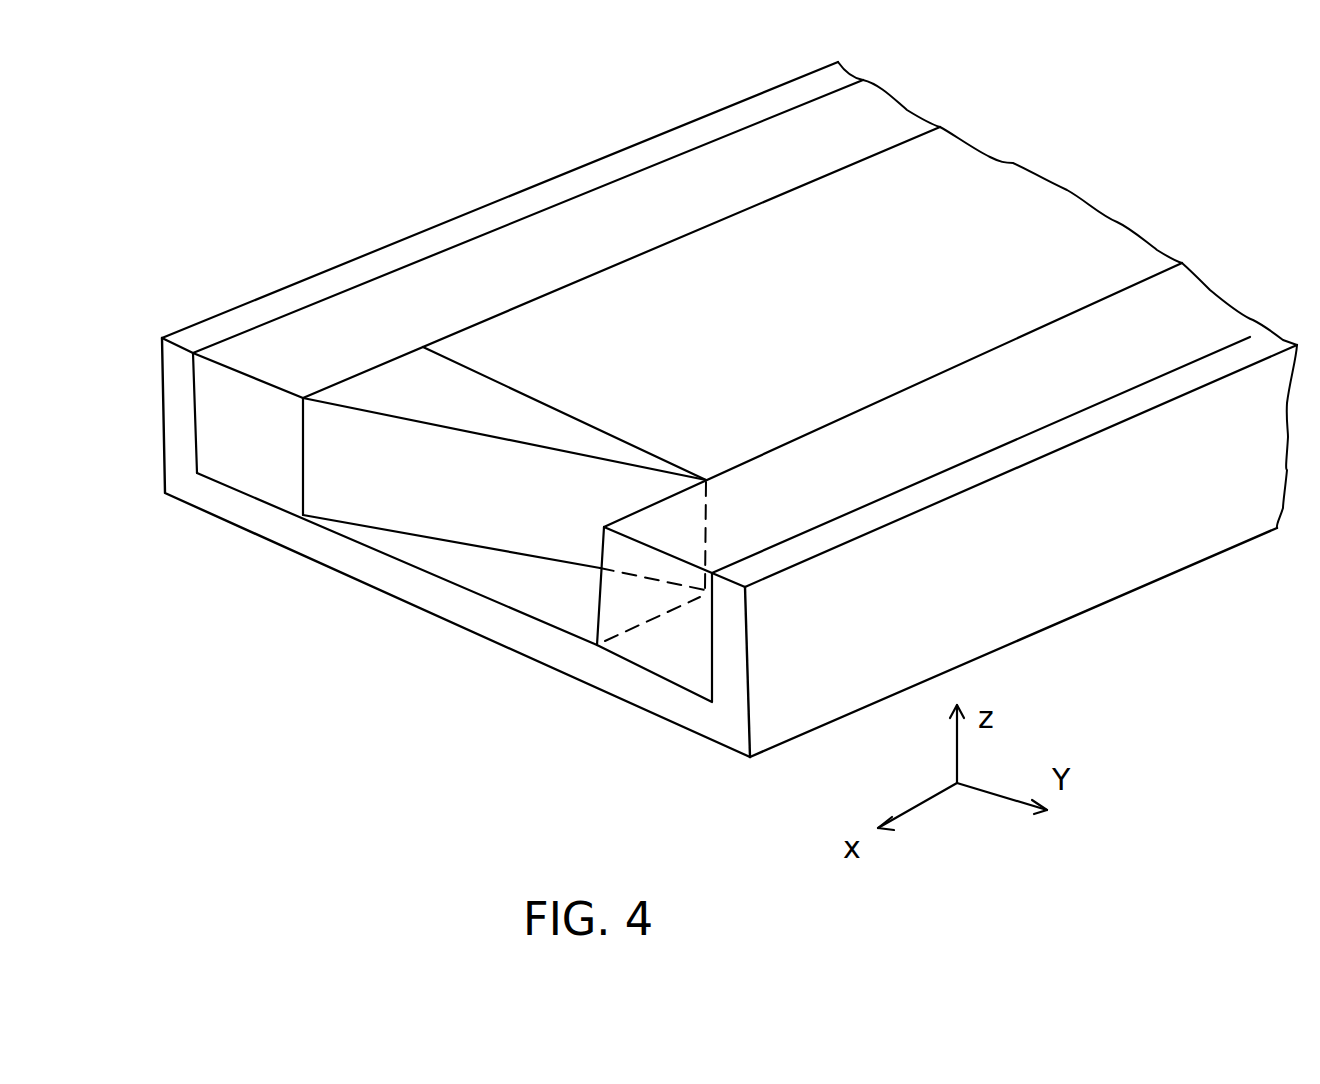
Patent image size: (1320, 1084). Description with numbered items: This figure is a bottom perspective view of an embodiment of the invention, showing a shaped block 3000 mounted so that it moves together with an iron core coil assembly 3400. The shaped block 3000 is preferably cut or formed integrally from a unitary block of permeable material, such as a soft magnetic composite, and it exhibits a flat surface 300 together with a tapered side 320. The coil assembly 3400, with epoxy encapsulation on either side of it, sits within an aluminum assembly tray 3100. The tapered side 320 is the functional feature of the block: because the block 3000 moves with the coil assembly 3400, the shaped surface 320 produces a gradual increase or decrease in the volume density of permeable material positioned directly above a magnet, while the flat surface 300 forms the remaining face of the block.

The shaped block 3000 is at (420, 483).
The aluminum assembly tray 3100 is at (1062, 582).
The iron core coil assembly 3400 is at (988, 198).
The flat surface 300 is at (495, 413).
The tapered side 320 is at (557, 443).